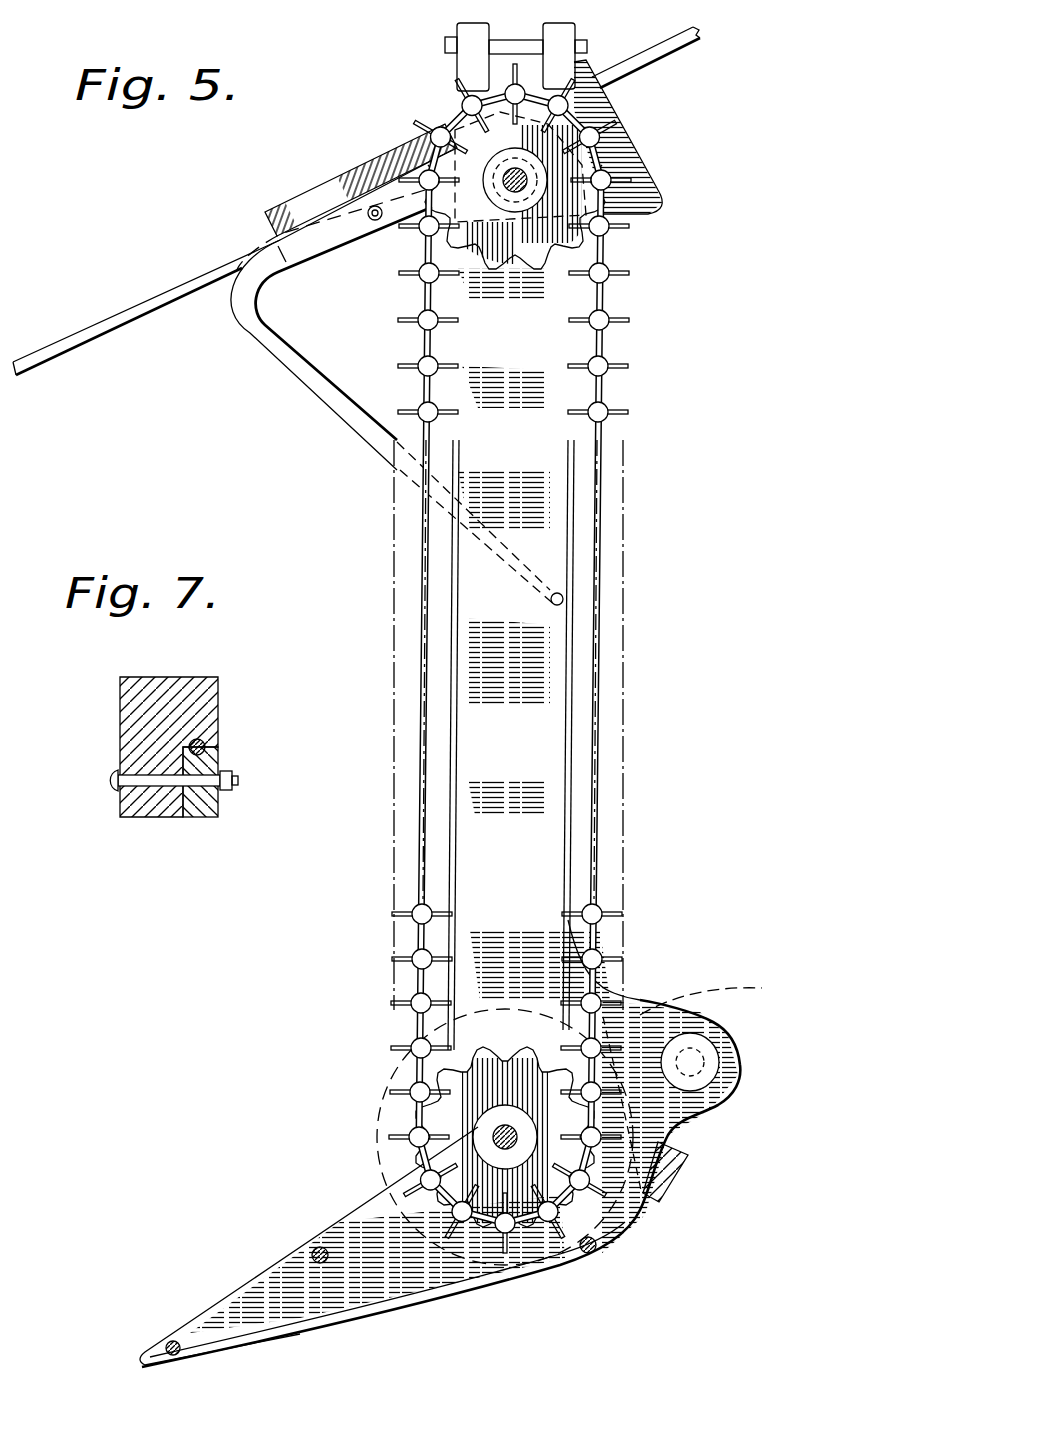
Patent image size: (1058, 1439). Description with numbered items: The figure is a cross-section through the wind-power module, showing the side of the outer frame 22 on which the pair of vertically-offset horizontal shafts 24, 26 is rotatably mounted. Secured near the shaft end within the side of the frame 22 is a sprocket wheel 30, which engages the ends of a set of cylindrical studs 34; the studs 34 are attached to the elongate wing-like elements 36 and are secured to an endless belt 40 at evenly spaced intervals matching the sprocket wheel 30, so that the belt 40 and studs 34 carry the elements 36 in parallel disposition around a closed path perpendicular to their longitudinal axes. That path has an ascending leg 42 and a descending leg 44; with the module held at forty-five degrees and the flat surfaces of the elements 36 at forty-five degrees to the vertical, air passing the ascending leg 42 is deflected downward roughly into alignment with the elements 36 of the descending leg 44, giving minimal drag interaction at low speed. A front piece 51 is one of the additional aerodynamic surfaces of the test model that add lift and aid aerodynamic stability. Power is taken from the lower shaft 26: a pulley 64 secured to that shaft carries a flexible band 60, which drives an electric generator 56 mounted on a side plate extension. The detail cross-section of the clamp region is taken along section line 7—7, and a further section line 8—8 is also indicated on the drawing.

The section line 7— 7 is at (320, 142).
The section line 8- 8 is at (500, 10).
The outer frame 22 is at (529, 659).
The horizontal shaft 24 is at (530, 172).
The lower shaft 26 is at (490, 1140).
The sprocket wheel 30 is at (492, 262).
The cylindrical studs 34 is at (418, 284).
The elongate wing-like elements 36 is at (412, 330).
The endless belt 40 is at (418, 392).
The ascending leg 42 is at (398, 576).
The descending leg 44 is at (604, 584).
The front piece 51 is at (393, 1302).
The electric generator 56 is at (707, 1093).
The flexible band 60 is at (719, 1001).
The pulley 64 is at (378, 1112).